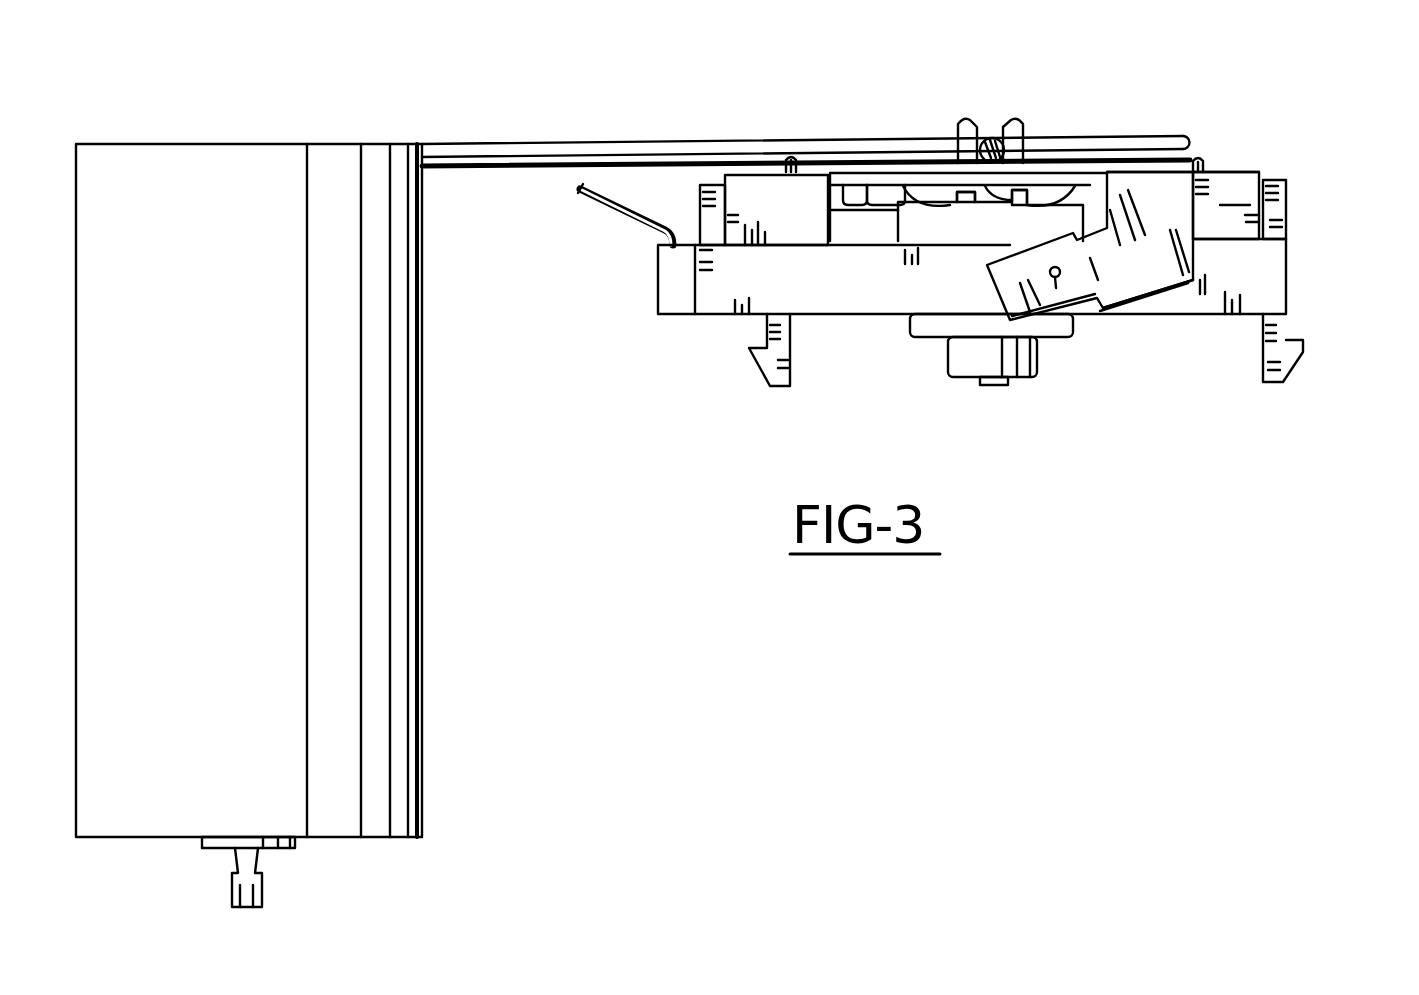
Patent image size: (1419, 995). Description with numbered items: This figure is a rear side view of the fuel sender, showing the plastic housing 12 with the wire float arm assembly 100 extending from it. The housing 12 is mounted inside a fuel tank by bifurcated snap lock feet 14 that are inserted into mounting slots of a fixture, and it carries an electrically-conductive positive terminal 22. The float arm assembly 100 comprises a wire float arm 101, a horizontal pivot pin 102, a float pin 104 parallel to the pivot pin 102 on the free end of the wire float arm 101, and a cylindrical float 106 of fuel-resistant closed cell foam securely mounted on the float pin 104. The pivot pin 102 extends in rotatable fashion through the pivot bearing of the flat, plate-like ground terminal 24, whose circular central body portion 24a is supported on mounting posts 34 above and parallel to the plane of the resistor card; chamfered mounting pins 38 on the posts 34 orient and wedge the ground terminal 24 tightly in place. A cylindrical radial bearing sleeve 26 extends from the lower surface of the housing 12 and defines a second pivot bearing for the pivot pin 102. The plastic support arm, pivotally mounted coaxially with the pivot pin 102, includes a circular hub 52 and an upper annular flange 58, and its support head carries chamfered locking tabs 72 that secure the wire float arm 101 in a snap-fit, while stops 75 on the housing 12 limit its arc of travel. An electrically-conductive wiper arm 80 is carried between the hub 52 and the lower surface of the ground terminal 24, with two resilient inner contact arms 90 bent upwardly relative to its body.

The wire float arm assembly 100 is at (202, 114).
The wire float arm 101 is at (457, 148).
The cylindrical float 106 is at (395, 703).
The float pin 104 is at (250, 860).
The positive terminal 22 is at (647, 220).
The housing 12 is at (1215, 302).
The bifurcated snap lock feet 14 is at (1299, 352).
The mounting posts 34 is at (755, 183).
The stops 75 is at (1282, 187).
The chamfered mounting pins 38 is at (793, 160).
The chamfered locking tabs 72 is at (1015, 135).
The circular central body portion 24a is at (883, 180).
The circular hub 52 is at (920, 235).
The wiper arm 80 is at (963, 210).
The inner contact arms 90 is at (913, 180).
The upper annular flange 58 is at (1017, 187).
The ground terminal 24 is at (1127, 272).
The radial bearing sleeve 26 is at (957, 362).
The pivot pin 102 is at (993, 383).